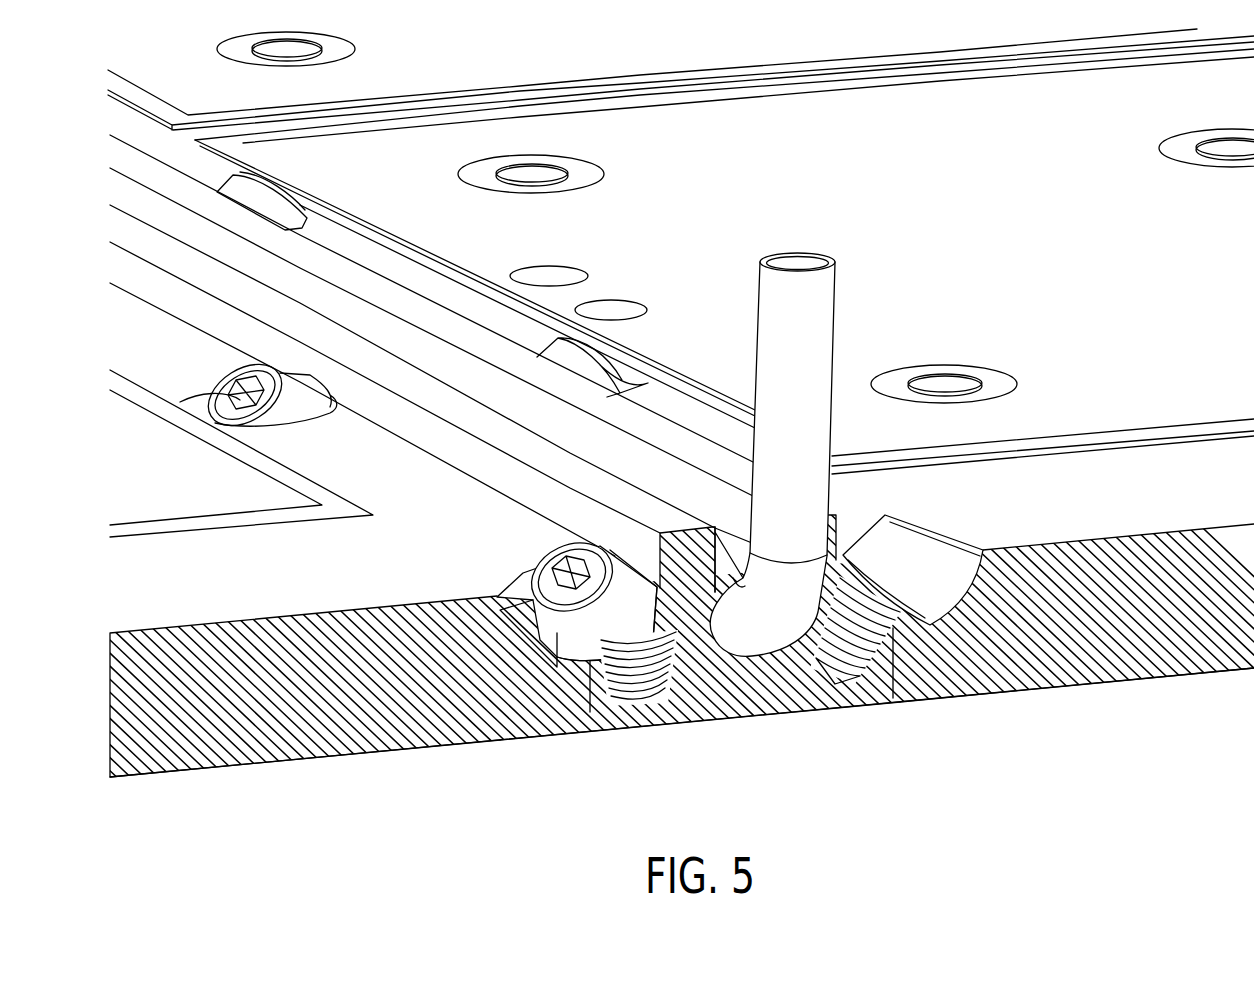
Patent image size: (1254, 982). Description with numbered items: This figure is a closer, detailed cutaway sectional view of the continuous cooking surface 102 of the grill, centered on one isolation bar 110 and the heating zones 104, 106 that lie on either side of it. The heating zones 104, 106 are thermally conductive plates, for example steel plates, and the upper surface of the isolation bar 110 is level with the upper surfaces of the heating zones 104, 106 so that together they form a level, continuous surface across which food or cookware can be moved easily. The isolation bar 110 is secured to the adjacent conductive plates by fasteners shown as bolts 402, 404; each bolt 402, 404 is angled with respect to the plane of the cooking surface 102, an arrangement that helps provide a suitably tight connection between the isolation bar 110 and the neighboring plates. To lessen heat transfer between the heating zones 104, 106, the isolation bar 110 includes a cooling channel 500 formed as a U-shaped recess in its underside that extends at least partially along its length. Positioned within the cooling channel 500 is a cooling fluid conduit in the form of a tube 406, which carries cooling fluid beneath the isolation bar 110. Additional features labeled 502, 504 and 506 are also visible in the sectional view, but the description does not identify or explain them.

The cooking surface 102 is at (955, 743).
The heating zone 104 is at (342, 753).
The heating zone 106 is at (1112, 673).
The isolation bar 110 is at (755, 708).
The bolt 402 is at (541, 558).
The bolt 404 is at (925, 523).
The tube 406 is at (836, 290).
The cooling channel 500 is at (720, 521).
The clamp boss 502 is at (217, 368).
The rail boss 504 is at (598, 356).
The rail boss 506 is at (275, 188).